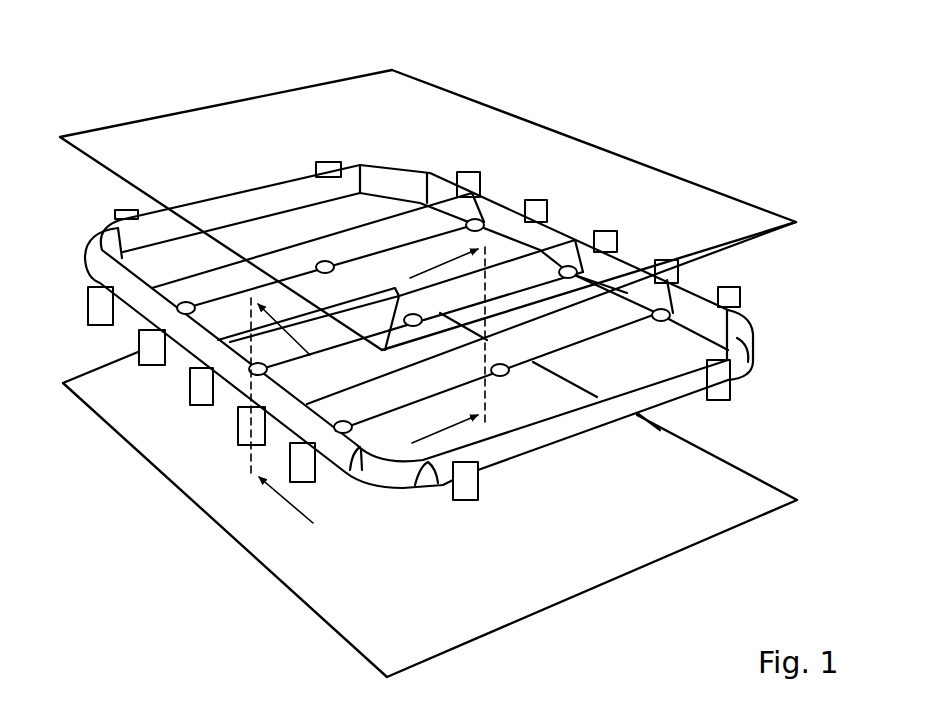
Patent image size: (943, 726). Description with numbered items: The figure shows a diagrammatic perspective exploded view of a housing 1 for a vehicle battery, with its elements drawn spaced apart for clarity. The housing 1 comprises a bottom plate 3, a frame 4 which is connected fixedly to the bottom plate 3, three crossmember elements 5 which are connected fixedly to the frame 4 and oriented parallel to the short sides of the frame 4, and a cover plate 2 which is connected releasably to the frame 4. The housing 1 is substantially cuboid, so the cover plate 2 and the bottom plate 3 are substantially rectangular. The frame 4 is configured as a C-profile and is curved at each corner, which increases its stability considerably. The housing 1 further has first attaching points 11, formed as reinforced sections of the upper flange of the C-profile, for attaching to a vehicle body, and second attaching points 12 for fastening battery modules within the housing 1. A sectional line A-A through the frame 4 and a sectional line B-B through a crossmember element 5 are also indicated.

The housing 1 is at (627, 110).
The cover plate 2 is at (226, 128).
The bottom plate 3 is at (378, 624).
The frame 4 is at (745, 328).
The crossmember element 5 is at (583, 332).
The first attaching point 11 is at (673, 272).
The second attaching point 12 is at (318, 268).